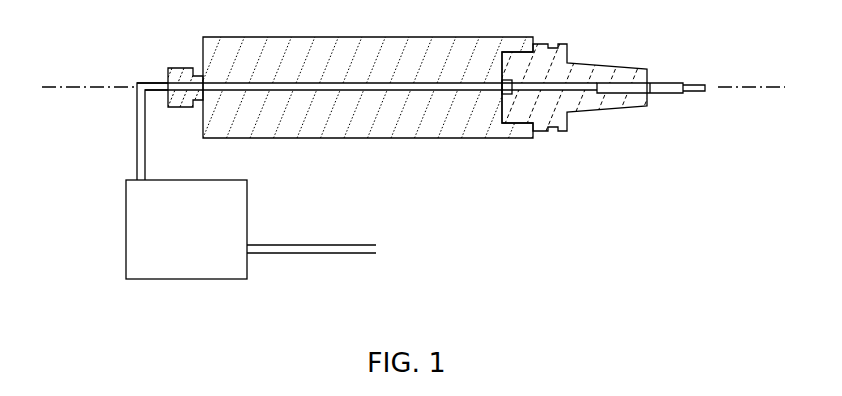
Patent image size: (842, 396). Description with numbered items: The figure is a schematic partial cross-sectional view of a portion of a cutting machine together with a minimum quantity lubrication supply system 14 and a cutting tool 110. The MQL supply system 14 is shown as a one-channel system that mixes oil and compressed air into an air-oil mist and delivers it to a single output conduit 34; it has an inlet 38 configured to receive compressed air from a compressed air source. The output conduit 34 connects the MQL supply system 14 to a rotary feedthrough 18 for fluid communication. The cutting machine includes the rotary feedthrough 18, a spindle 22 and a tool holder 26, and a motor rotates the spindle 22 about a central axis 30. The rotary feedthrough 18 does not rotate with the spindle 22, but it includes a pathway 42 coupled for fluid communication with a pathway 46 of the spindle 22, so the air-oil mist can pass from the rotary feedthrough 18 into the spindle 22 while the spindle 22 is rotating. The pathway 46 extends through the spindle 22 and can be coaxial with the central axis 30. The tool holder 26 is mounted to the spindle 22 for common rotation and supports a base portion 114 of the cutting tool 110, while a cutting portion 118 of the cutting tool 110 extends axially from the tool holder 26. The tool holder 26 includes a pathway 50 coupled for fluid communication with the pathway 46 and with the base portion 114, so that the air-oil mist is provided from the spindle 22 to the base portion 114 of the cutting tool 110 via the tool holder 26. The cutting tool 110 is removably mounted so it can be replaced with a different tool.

The minimum quantity lubrication supply system 14 is at (126, 227).
The rotary feedthrough 18 is at (180, 68).
The spindle 22 is at (418, 138).
The tool holder 26 is at (563, 131).
The central axis 30 is at (89, 87).
The output conduit 34 is at (137, 126).
The inlet 38 is at (298, 254).
The pathway of the rotary feedthrough 42 is at (181, 92).
The pathway of the spindle 46 is at (278, 90).
The pathway of the tool holder 50 is at (545, 93).
The cutting tool 110 is at (677, 93).
The base portion 114 is at (624, 93).
The cutting portion 118 is at (690, 84).